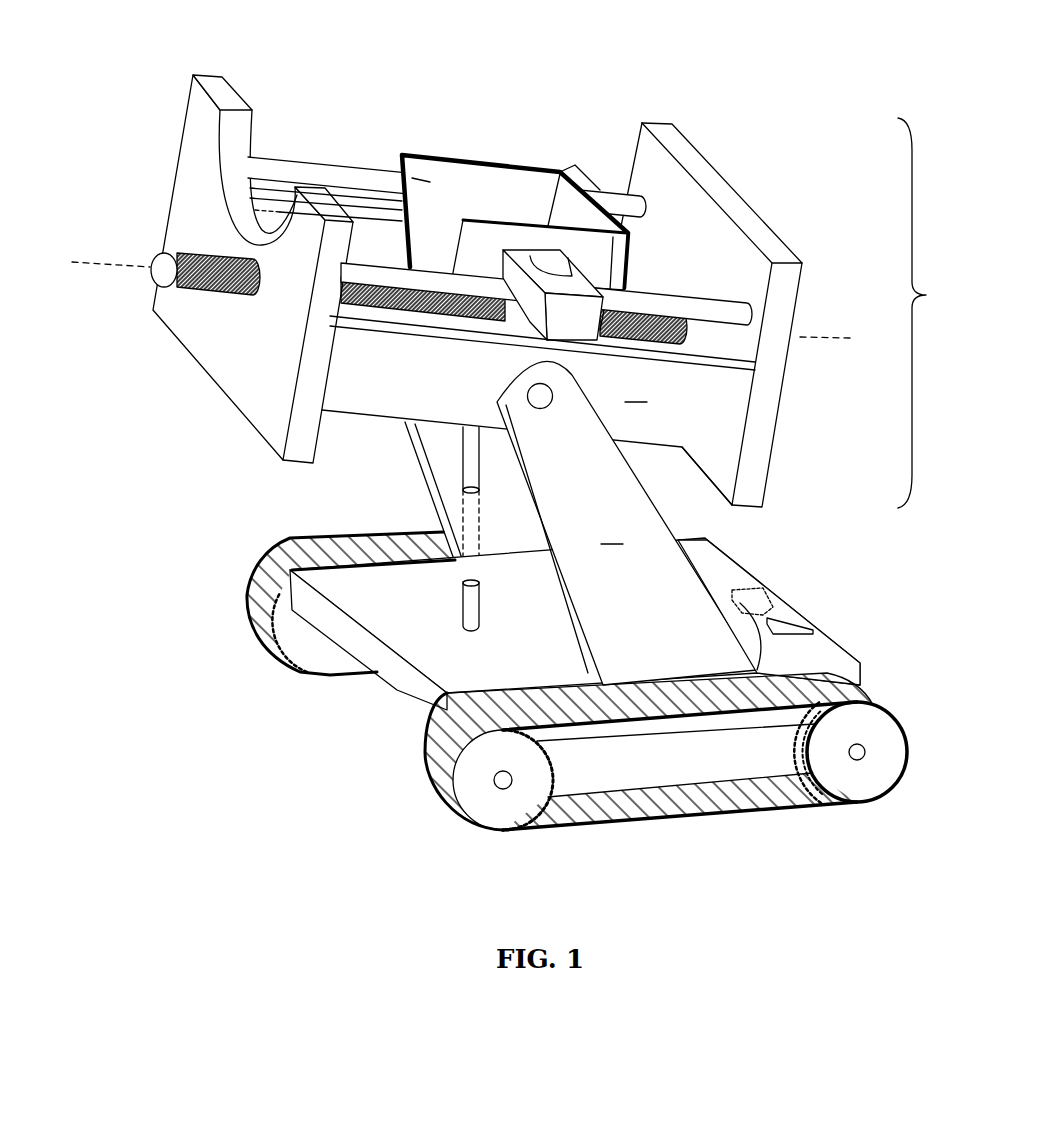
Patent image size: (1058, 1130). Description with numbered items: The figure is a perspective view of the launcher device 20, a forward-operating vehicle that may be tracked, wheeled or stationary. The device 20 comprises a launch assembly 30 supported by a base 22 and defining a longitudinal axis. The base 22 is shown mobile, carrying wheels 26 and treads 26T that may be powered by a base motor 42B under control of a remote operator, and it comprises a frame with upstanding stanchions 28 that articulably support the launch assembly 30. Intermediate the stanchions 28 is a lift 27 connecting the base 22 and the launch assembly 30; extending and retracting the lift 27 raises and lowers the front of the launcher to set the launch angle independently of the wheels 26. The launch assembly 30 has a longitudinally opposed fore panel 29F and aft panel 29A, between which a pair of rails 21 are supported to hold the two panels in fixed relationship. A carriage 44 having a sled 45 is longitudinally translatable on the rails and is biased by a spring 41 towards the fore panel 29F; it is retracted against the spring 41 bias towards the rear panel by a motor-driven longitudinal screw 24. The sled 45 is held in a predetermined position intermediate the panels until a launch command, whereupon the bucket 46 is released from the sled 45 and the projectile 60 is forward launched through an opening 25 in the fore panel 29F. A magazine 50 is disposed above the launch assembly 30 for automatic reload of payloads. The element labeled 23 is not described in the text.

The device 20 is at (501, 462).
The rail 21 is at (360, 217).
The base 22 is at (393, 665).
The guide rail 23 is at (316, 170).
The longitudinal screw 24 is at (200, 293).
The opening 25 is at (247, 233).
The wheel 26 is at (250, 585).
The tread 26T is at (370, 532).
The lift 27 is at (470, 467).
The upstanding stanchion 28 is at (441, 441).
The aft panel 29A is at (767, 387).
The fore panel 29F is at (204, 269).
The launch assembly 30 is at (509, 265).
The spring 41 is at (272, 213).
The base motor 42B is at (752, 601).
The carriage 44 is at (460, 132).
The sled 45 is at (515, 200).
The bucket 46 is at (421, 178).
The magazine 50 is at (790, 626).
The projectile 60 is at (540, 163).